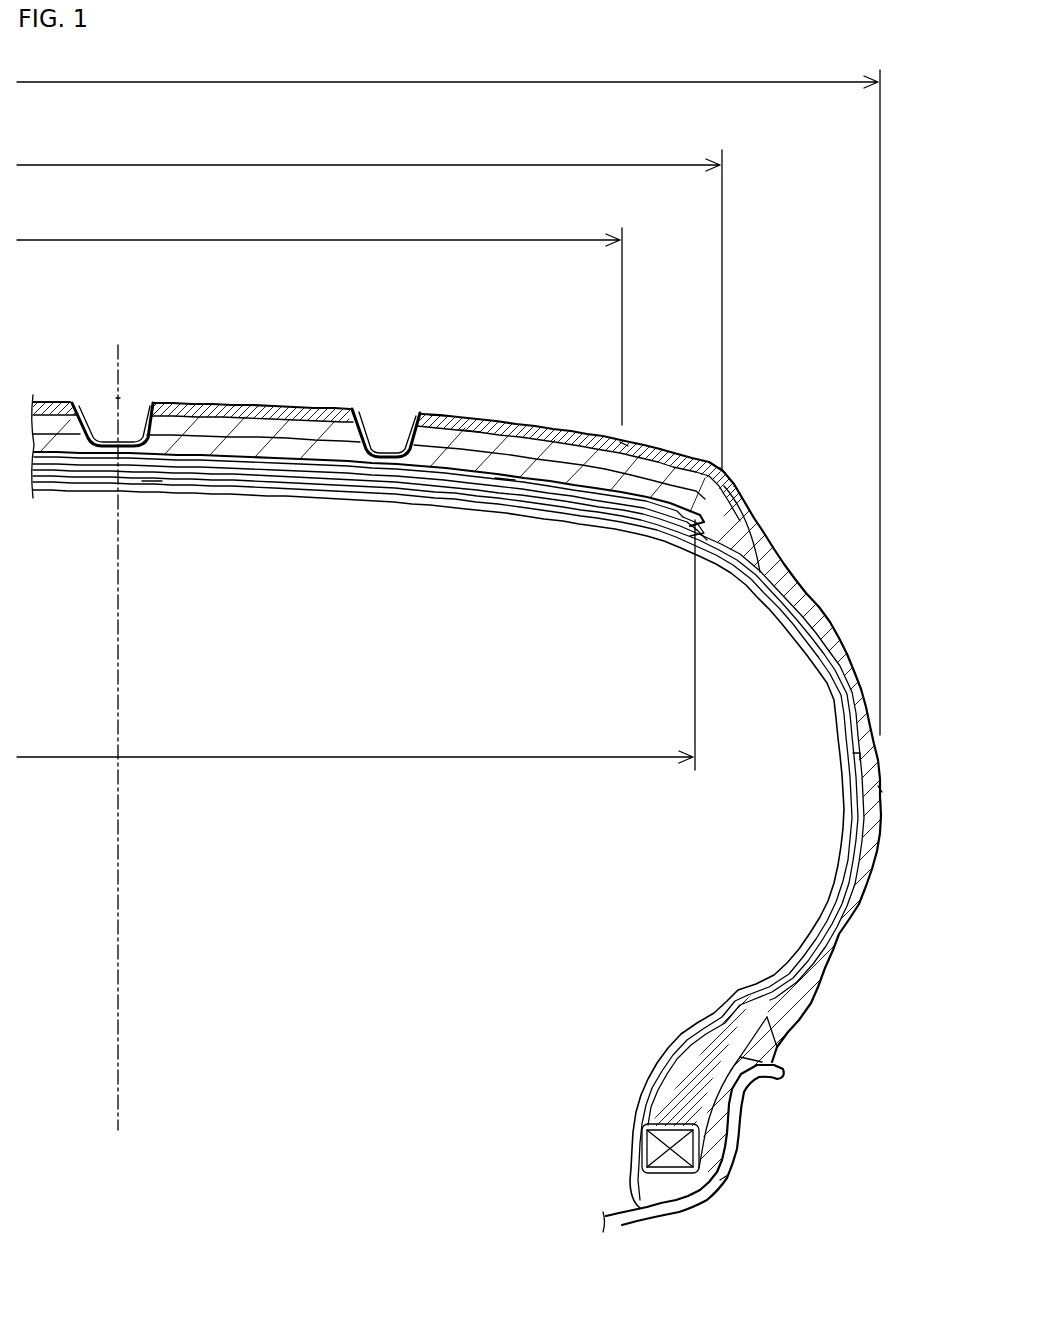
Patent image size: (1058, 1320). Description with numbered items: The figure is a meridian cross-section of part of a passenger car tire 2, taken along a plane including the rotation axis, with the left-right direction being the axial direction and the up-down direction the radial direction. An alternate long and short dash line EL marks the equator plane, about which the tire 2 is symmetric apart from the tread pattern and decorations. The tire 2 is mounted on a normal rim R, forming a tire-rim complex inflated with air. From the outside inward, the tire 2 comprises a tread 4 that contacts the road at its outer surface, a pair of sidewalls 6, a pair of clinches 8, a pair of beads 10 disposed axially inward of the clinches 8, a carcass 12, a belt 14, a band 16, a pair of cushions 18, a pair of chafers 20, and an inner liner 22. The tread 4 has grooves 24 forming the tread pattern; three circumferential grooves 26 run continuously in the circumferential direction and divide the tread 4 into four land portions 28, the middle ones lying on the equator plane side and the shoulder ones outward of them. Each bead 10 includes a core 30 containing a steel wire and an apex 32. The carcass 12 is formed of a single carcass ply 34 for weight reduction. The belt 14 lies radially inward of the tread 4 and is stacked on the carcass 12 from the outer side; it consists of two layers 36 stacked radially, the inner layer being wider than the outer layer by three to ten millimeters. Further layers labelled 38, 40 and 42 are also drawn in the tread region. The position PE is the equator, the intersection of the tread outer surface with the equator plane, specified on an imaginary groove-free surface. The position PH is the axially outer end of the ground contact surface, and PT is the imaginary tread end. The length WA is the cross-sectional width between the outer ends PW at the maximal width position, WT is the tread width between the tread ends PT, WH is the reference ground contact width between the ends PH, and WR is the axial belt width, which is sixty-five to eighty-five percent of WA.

The tire 2 is at (784, 342).
The tread 4 is at (520, 410).
The sidewall 6 is at (870, 815).
The clinch 8 is at (770, 1035).
The bead 10 is at (560, 1085).
The carcass 12 is at (228, 492).
The belt 14 is at (426, 592).
The band 16 is at (220, 452).
The cushion 18 is at (698, 527).
The chafer 20 is at (628, 1195).
The inner liner 22 is at (822, 823).
The groove 24 is at (150, 405).
The circumferential groove 26 is at (369, 397).
The land portion 28 is at (568, 432).
The core 30 is at (652, 1147).
The apex 32 is at (677, 1093).
The carcass ply 34 is at (152, 482).
The layer 36 is at (308, 472).
The tread surface layer 38 is at (440, 414).
The base layer 40 is at (470, 440).
The inner belt layer 42 is at (505, 465).
The equator PE is at (110, 393).
The reference ground contact end PH is at (625, 448).
The imaginary tread end PT is at (723, 472).
The outer end PW is at (883, 790).
The equator plane EL is at (120, 857).
The cross-sectional width WA is at (448, 395).
The width of the tread WT is at (369, 304).
The width of the reference ground contact surface WH is at (319, 319).
The axial width of the belt WR is at (356, 658).
The rim R is at (735, 1187).